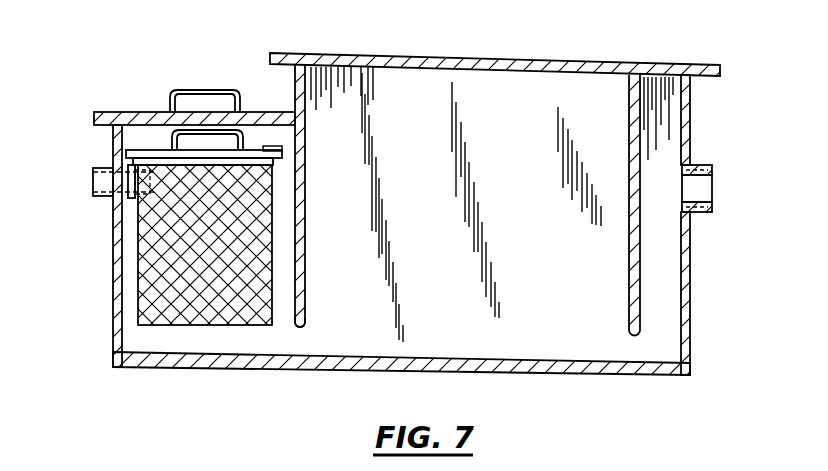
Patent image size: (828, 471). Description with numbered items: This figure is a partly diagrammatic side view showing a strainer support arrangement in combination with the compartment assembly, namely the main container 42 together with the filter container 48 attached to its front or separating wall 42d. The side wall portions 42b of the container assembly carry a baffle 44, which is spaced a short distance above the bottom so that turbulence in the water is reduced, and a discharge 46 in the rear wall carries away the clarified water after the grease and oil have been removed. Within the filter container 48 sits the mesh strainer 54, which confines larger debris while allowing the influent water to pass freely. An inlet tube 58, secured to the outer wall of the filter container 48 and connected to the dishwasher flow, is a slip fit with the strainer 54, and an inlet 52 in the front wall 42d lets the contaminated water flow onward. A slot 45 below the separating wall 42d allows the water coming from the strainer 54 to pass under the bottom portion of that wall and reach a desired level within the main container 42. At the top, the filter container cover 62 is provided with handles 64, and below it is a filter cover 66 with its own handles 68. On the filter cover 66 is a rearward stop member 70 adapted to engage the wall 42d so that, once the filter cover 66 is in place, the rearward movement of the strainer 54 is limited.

The container 42 is at (413, 95).
The side wall portions 42b is at (523, 103).
The front wall 42d is at (358, 230).
The baffle 44 is at (628, 248).
The slot 45 is at (297, 335).
The discharge 46 is at (700, 214).
The filter container 48 is at (113, 335).
The inlet 52 is at (133, 203).
The strainer 54 is at (157, 260).
The inlet tube 58 is at (93, 180).
The cover 62 is at (130, 112).
The handles 64 is at (197, 92).
The filter cover 66 is at (126, 150).
The handles 68 is at (243, 137).
The rearward stop member 70 is at (292, 143).